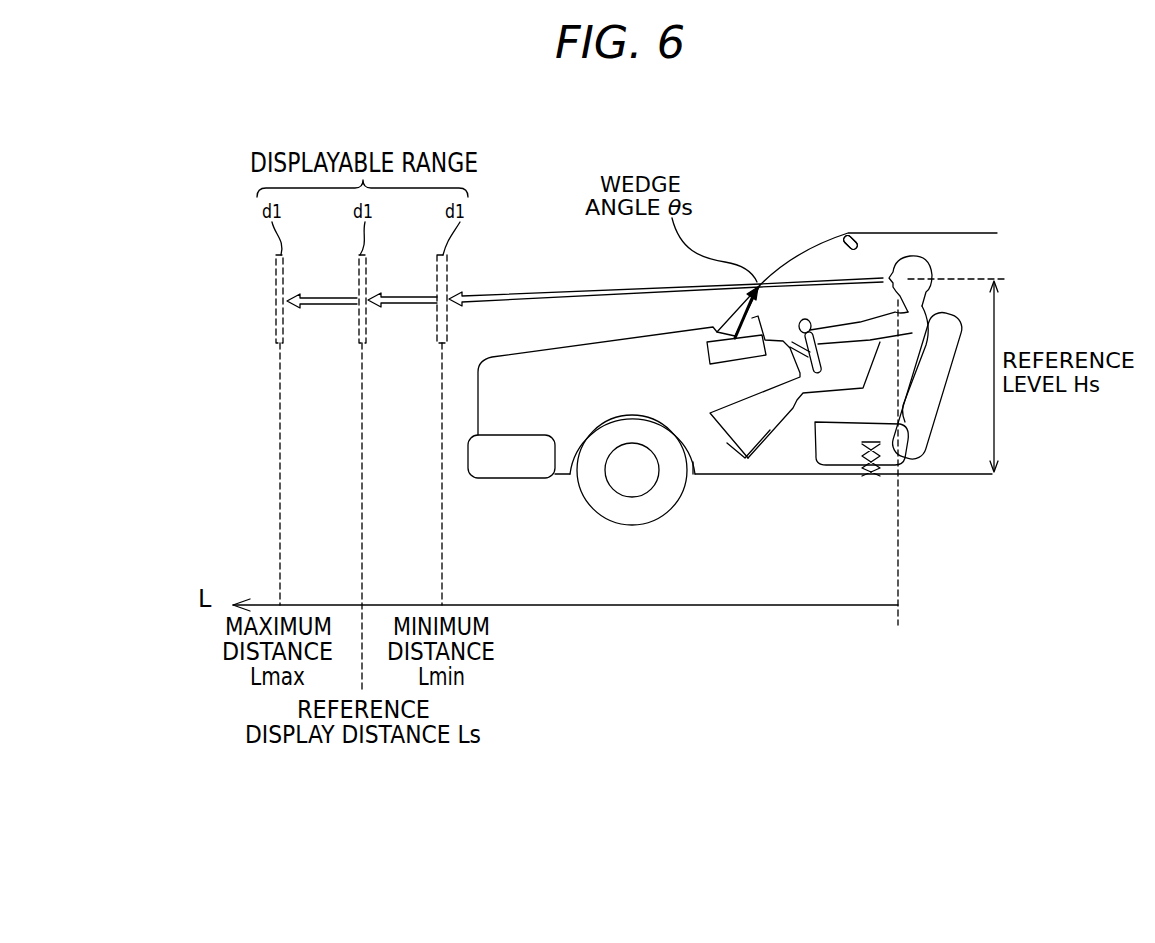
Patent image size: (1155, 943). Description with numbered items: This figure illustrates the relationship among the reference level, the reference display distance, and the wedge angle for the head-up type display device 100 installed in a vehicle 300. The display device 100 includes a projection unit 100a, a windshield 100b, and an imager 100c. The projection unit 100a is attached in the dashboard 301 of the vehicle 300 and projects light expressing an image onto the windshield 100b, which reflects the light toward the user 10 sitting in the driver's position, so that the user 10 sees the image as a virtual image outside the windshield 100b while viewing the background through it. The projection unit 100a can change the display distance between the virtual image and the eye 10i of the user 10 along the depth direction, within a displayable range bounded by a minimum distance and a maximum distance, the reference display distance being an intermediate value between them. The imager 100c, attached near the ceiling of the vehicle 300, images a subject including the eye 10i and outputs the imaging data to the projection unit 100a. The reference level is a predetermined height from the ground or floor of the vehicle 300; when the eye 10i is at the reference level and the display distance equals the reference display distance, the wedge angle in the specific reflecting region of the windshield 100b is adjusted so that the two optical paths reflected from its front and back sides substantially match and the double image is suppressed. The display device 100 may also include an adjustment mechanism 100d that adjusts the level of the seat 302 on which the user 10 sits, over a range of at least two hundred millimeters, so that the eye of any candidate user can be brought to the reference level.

The vehicle 300 is at (948, 236).
The user 10 is at (925, 260).
The eye 10i is at (867, 246).
The display device 100 is at (791, 378).
The projection unit 100a is at (722, 357).
The windshield 100b is at (761, 282).
The imager 100c is at (847, 239).
The adjustment mechanism 100d is at (865, 476).
The dashboard 301 is at (778, 373).
The seat 302 is at (927, 405).